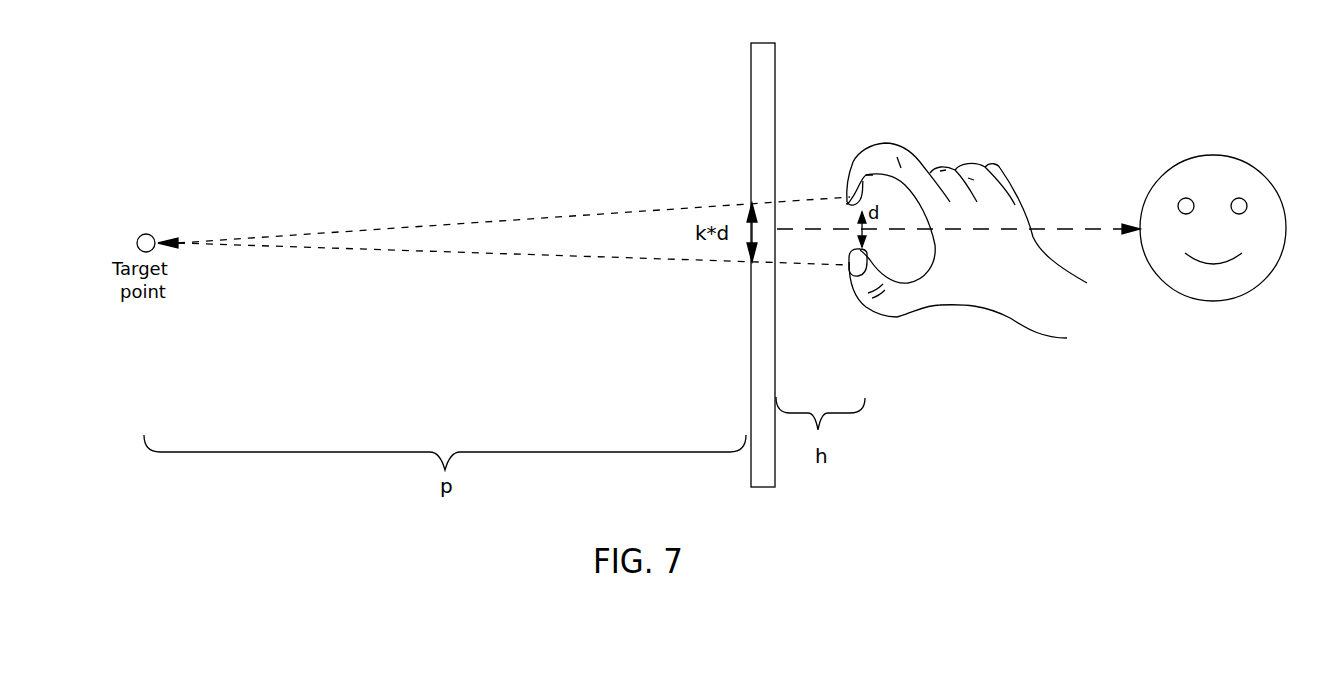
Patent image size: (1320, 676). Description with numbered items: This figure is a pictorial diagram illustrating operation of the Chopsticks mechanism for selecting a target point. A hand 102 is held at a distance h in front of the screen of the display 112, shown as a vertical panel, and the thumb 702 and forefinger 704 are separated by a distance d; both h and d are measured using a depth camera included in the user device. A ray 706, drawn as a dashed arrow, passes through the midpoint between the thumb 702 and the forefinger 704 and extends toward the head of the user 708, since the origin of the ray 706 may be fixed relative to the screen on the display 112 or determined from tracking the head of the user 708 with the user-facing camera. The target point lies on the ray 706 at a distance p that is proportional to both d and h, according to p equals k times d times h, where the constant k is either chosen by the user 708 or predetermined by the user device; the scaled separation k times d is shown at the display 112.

The display 112 is at (775, 92).
The forefinger 704 is at (910, 153).
The thumb 702 is at (895, 317).
The hand 102 is at (1013, 202).
The ray 706 is at (1067, 235).
The user 708 is at (1247, 180).